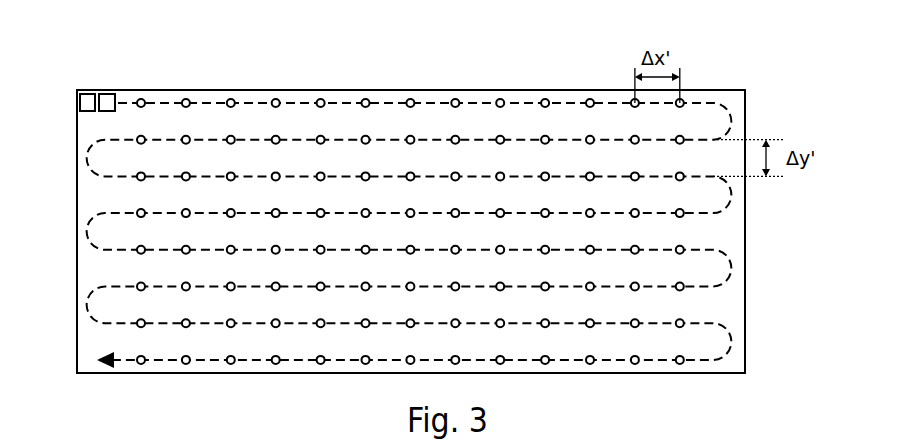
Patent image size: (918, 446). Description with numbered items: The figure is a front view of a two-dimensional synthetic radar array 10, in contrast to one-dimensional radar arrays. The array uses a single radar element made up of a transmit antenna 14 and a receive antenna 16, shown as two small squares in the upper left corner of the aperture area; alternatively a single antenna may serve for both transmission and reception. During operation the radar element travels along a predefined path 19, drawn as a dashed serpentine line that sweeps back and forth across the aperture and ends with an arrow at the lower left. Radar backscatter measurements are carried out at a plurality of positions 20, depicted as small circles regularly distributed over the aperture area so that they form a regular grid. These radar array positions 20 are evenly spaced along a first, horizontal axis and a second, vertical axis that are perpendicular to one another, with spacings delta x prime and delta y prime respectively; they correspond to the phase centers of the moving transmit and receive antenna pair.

The 2D-synthetic radar array 10 is at (752, 245).
The transmit antenna 14 is at (87, 93).
The receive antenna 16 is at (108, 93).
The predefined path 19 is at (287, 102).
The radar array positions 20 is at (545, 99).